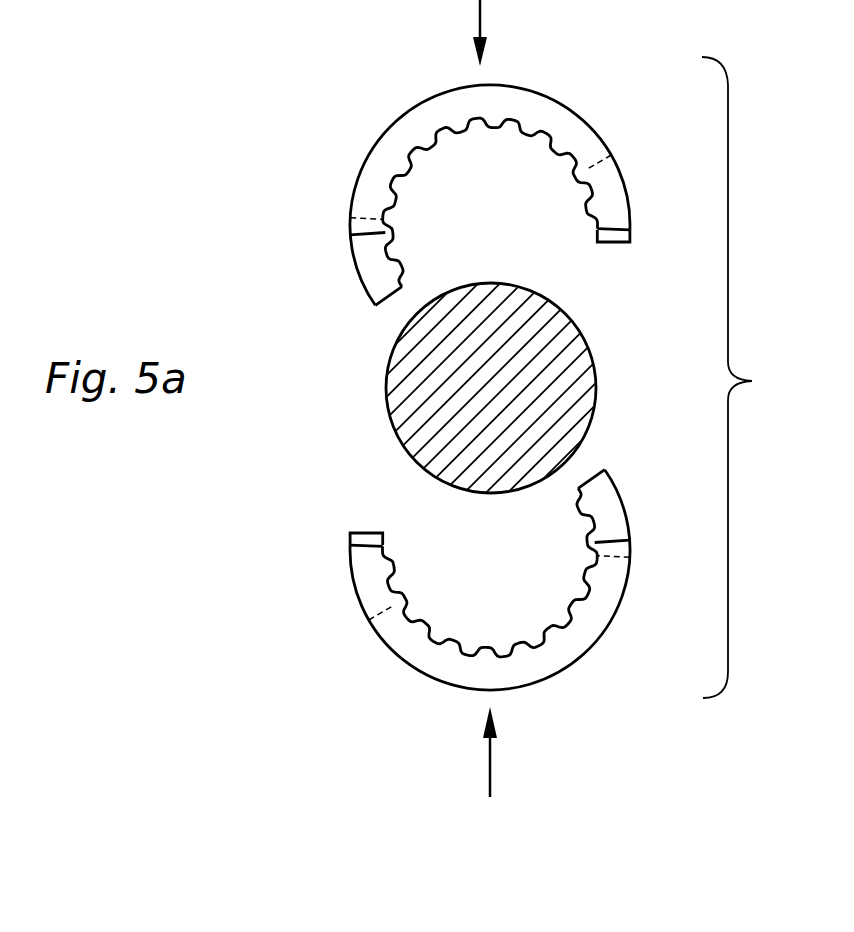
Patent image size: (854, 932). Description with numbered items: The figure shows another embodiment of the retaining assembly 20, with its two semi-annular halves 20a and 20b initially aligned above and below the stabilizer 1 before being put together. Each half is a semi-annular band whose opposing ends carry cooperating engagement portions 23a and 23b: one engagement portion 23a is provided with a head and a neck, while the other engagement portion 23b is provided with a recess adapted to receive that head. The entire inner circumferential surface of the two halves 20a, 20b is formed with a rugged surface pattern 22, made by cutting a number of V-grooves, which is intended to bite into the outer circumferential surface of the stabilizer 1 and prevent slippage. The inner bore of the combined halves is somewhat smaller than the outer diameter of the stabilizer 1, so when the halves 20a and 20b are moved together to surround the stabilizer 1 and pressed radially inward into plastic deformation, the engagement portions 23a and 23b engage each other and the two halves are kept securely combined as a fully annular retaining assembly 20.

The stabilizer 1 is at (583, 362).
The retaining assembly 20 is at (534, 377).
The semi-annular half 20a is at (562, 128).
The semi-annular half 20b is at (583, 642).
The rugged surface pattern 22 is at (433, 142).
The engagement portion 23a is at (362, 252).
The engagement portion 23b is at (623, 208).